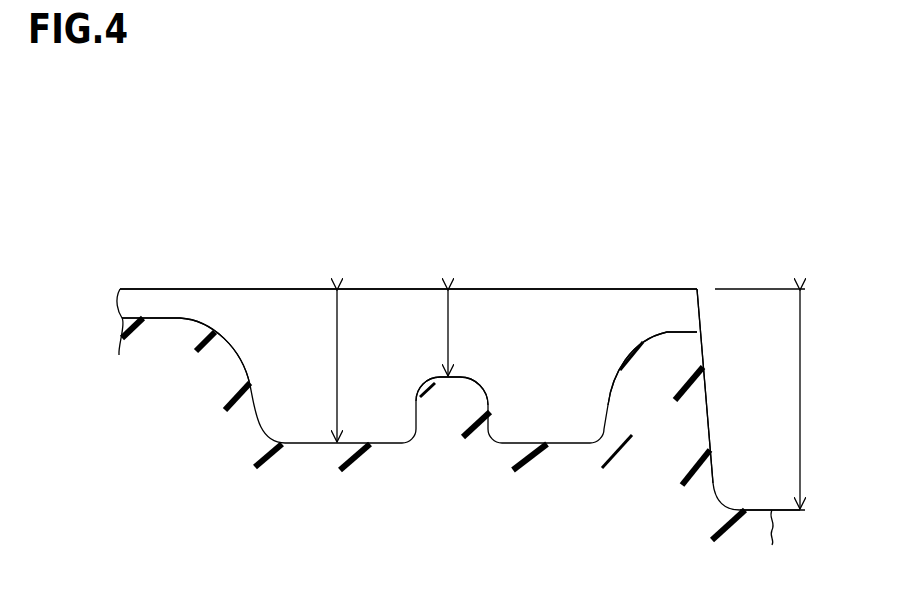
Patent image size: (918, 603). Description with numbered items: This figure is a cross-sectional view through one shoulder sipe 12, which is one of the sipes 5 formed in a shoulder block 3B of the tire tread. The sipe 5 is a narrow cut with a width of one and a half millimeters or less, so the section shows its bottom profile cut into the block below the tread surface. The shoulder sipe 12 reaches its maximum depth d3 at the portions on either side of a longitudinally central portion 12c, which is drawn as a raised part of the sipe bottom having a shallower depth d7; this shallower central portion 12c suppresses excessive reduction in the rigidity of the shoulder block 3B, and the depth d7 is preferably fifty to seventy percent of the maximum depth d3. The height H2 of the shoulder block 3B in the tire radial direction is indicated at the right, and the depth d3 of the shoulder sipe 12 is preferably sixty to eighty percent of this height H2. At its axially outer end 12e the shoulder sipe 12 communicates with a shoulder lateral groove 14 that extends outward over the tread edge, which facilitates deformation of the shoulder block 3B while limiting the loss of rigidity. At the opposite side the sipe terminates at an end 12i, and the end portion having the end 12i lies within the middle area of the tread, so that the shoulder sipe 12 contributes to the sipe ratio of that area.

The sipe 5 is at (367, 273).
The shoulder sipe 12 is at (458, 345).
The longitudinally central portion 12c is at (470, 345).
The axially outer end 12e is at (168, 288).
The end 12i is at (697, 289).
The shoulder lateral groove 14 is at (146, 304).
The shoulder block 3B is at (658, 242).
The depth of shoulder sipe d3 is at (335, 370).
The depth of central portion d7 is at (448, 332).
The height of shoulder block H2 is at (778, 399).